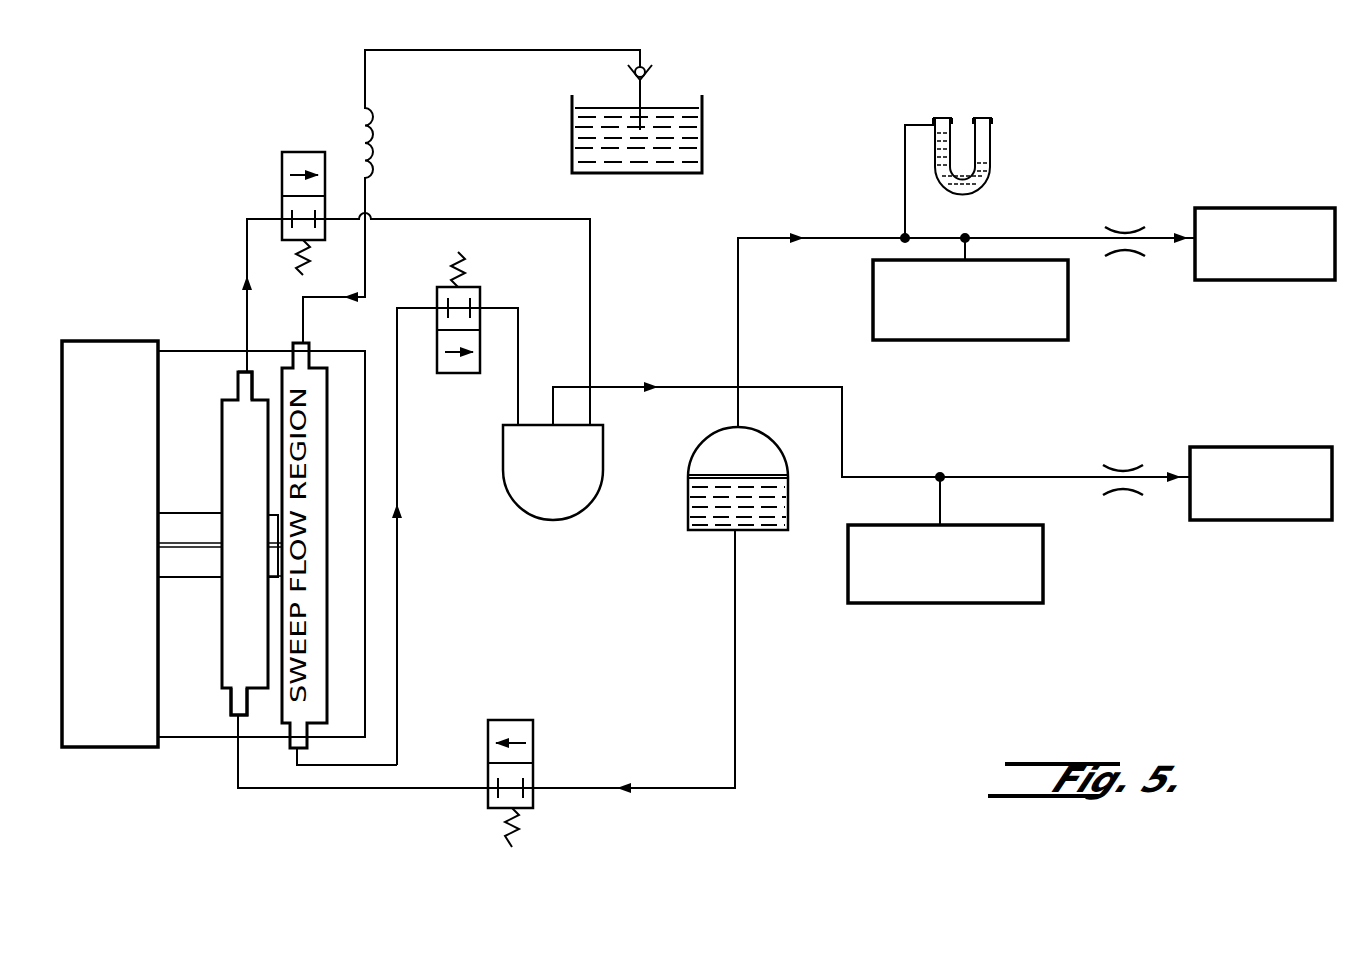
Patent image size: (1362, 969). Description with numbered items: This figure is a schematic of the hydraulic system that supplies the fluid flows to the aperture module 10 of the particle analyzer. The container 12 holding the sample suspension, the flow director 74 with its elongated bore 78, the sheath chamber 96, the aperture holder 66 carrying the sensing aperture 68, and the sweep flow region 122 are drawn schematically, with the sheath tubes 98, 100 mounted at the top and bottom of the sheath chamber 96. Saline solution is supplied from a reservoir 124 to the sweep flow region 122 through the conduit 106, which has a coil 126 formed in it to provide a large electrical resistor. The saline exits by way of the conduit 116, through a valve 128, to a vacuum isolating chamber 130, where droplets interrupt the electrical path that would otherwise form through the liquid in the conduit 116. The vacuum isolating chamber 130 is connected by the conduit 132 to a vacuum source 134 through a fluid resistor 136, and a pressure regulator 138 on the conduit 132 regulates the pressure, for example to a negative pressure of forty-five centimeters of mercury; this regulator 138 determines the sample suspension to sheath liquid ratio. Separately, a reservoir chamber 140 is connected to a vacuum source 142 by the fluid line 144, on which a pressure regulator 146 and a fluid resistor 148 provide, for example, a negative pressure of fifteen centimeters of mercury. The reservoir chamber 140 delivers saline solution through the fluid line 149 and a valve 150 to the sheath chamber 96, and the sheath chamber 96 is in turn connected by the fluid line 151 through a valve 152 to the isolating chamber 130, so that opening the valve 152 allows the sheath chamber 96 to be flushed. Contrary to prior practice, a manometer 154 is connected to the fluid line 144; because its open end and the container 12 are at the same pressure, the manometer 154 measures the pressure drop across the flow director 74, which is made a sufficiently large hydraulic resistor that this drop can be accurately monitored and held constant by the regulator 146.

The aperture module 10 is at (193, 300).
The container 12 is at (92, 405).
The aperture holder 66 is at (272, 515).
The aperture 68 is at (273, 540).
The flow director 74 is at (208, 512).
The elongated bore 78 is at (175, 550).
The sheath chamber 96 is at (222, 452).
The sheath tube 98 is at (235, 388).
The sheath tube 100 is at (232, 702).
The conduit 106 is at (367, 195).
The conduit 116 is at (400, 615).
The sweep flow region 122 is at (325, 578).
The reservoir 124 is at (705, 130).
The coil 126 is at (356, 117).
The valve 128 is at (482, 297).
The vacuum isolating chamber 130 is at (607, 447).
The conduit 132 is at (612, 385).
The vacuum source 134 is at (1268, 447).
The fluid resistor 136 is at (1118, 493).
The pressure regulator 138 is at (1045, 580).
The reservoir chamber 140 is at (792, 492).
The vacuum source 142 is at (1272, 207).
The fluid line 144 is at (755, 233).
The pressure regulator 146 is at (1070, 320).
The fluid resistor 148 is at (1125, 257).
The fluid line 149 is at (683, 790).
The valve 150 is at (535, 733).
The fluid line 151 is at (255, 217).
The valve 152 is at (292, 152).
The manometer 154 is at (990, 152).